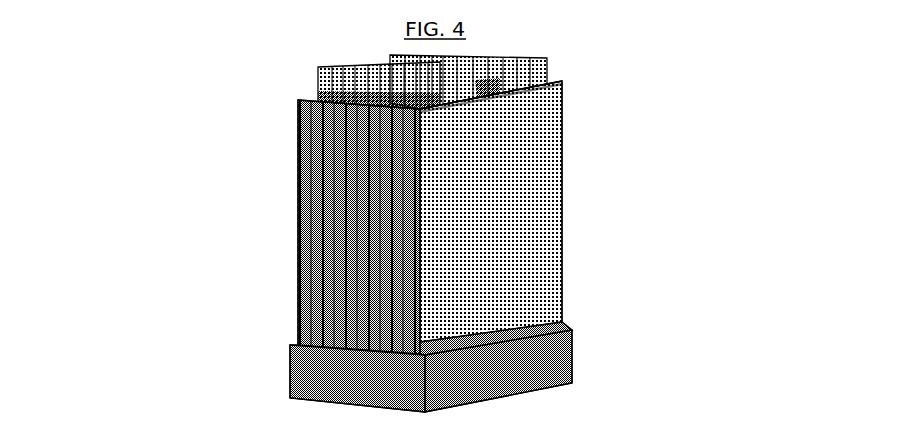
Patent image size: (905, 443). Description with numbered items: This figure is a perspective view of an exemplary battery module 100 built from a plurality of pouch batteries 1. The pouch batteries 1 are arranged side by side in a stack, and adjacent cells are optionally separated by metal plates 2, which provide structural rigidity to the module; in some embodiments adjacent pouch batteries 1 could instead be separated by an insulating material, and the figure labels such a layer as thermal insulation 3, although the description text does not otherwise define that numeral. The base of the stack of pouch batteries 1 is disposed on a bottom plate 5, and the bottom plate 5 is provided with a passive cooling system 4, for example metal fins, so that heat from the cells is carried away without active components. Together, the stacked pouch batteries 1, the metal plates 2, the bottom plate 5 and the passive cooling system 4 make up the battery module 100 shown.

The pouch batteries 1 is at (336, 342).
The metal plates 2 is at (398, 322).
The thermal insulation 3 is at (322, 340).
The passive cooling system 4 is at (322, 375).
The bottom plate 5 is at (569, 329).
The battery module 100 is at (645, 296).